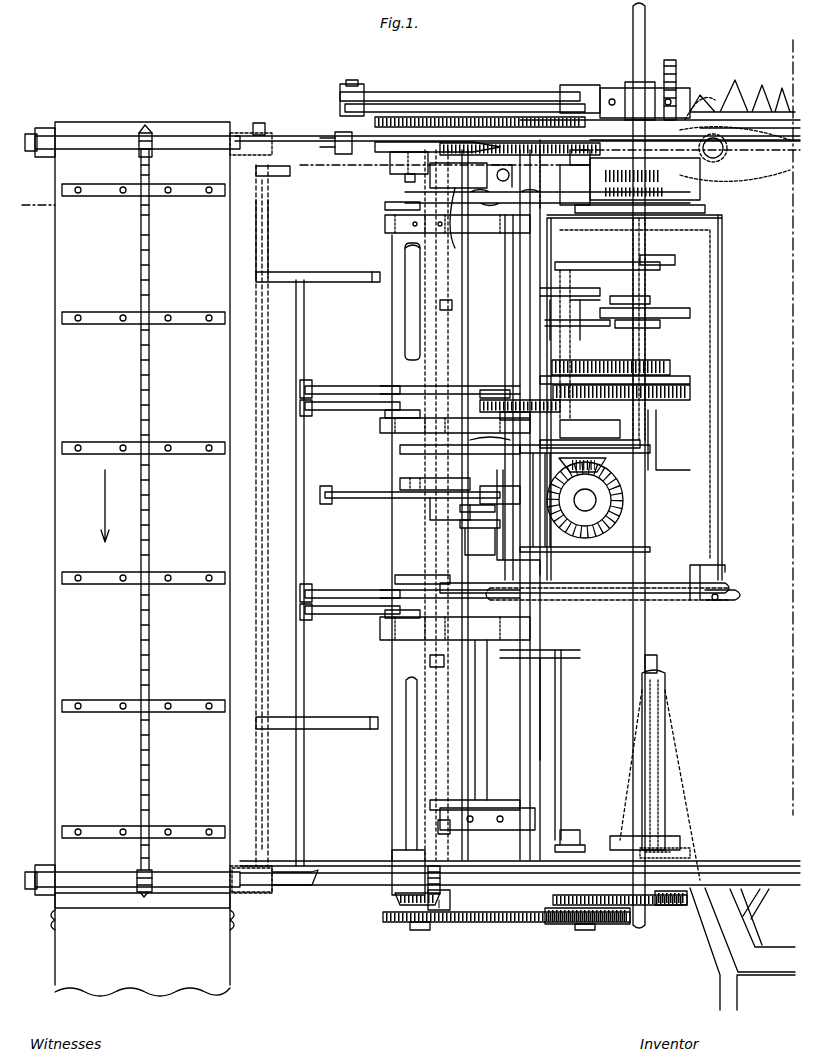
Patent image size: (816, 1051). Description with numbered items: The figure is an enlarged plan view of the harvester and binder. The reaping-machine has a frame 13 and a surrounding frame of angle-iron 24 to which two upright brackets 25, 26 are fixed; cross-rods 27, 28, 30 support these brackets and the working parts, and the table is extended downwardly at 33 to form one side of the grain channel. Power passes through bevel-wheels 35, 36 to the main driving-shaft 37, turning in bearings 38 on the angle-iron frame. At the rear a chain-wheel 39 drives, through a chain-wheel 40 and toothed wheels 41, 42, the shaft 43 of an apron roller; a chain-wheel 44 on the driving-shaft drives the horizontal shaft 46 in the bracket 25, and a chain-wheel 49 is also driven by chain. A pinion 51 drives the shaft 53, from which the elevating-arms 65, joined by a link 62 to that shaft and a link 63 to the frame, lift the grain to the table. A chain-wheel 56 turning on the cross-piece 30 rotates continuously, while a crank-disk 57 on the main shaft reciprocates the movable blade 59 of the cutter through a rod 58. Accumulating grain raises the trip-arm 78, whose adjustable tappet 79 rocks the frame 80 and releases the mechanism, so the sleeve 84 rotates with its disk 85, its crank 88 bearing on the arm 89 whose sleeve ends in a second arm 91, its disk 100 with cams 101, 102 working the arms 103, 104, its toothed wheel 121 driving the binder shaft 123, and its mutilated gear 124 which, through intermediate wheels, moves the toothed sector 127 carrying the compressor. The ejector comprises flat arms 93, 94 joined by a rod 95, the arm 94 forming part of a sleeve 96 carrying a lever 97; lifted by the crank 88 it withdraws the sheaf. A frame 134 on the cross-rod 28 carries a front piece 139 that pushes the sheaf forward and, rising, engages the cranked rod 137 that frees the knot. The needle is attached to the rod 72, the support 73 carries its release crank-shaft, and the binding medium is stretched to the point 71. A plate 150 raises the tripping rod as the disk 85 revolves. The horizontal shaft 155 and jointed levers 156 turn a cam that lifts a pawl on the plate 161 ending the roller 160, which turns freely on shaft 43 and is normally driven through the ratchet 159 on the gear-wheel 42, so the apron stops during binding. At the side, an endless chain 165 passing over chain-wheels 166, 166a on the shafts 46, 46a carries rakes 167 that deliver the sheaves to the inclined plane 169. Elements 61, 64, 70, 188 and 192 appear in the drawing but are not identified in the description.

The frame 13 is at (690, 780).
The angle-iron frame 24 is at (392, 300).
The upright bracket 25 is at (368, 866).
The upright bracket 26 is at (293, 136).
The cross-rod 27 is at (258, 348).
The cross-rod 28 is at (538, 718).
The cross-rod 30 is at (648, 12).
The extended portion of the table 33 is at (392, 170).
The bevel-wheel 35 is at (442, 905).
The bevel-wheel 36 is at (398, 905).
The main driving-shaft 37 is at (404, 338).
The bearings 38 is at (392, 848).
The chain-wheel 39 is at (415, 930).
The chain-wheel 40 is at (565, 928).
The toothed wheel 41 is at (395, 117).
The toothed wheel 42 is at (673, 906).
The shaft 43 is at (660, 665).
The chain-wheel 44 is at (448, 875).
The horizontal shaft 46 is at (296, 890).
The shaft 46a is at (190, 138).
The chain-wheel 49 is at (555, 105).
The pinion 51 is at (395, 153).
The shaft 53 is at (436, 165).
The chain-wheel 56 is at (666, 130).
The crank-disk 57 is at (443, 92).
The rod 58 is at (488, 104).
The movable blade 59 is at (748, 85).
The vertical rod 61 is at (535, 250).
The link 62 is at (470, 235).
The link 63 is at (385, 205).
The bearing block 64 is at (388, 225).
The elevating-arms 65 is at (528, 215).
The lever 70 is at (360, 505).
The point 71 is at (500, 508).
The rod 72 is at (400, 500).
The support 73 is at (400, 484).
The trip-arm 78 is at (560, 590).
The tappet 79 is at (725, 590).
The frame 80 is at (724, 408).
The sleeve 84 is at (648, 240).
The disk 85 is at (706, 208).
The crank 88 is at (646, 268).
The arm 89 is at (572, 270).
The second arm 91 is at (520, 195).
The ejector arm 93 is at (328, 732).
The ejector arm 94 is at (345, 285).
The rod 95 is at (296, 480).
The sleeve 96 is at (270, 240).
The lever 97 is at (283, 178).
The disk 100 is at (680, 318).
The cam 101 is at (652, 300).
The cam 102 is at (660, 328).
The arm 103 is at (571, 289).
The arm 104 is at (577, 320).
The toothed wheel 121 is at (672, 368).
The shaft 123 is at (620, 428).
The mutilated gear 124 is at (680, 402).
The toothed sector 127 is at (480, 406).
The frame 134 is at (492, 590).
The cranked rod 137 is at (668, 436).
The front piece 139 is at (497, 540).
The plate 150 is at (690, 180).
The horizontal shaft 155 is at (562, 740).
The jointed levers 156 is at (568, 830).
The ratchet 159 is at (690, 852).
The roller 160 is at (666, 700).
The plate 161 is at (680, 840).
The endless chain 165 is at (150, 272).
The chain-wheel 166 is at (150, 870).
The chain-wheel 166a is at (140, 133).
The rakes 167 is at (175, 440).
The inclined plane 169 is at (235, 979).
The pivot circle 188 is at (722, 160).
The arm 192 is at (460, 220).